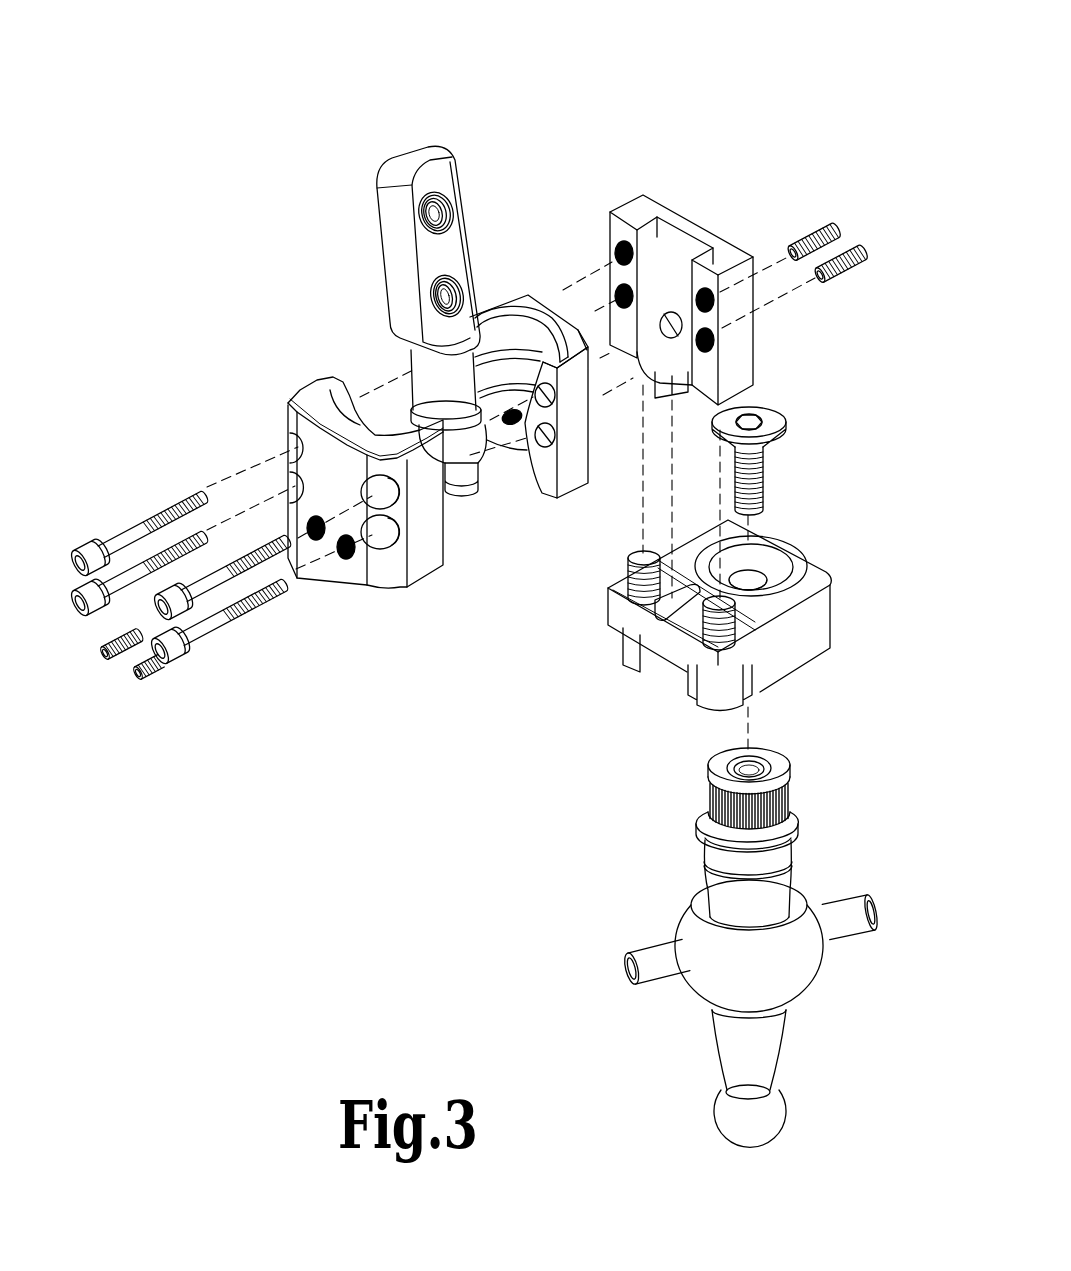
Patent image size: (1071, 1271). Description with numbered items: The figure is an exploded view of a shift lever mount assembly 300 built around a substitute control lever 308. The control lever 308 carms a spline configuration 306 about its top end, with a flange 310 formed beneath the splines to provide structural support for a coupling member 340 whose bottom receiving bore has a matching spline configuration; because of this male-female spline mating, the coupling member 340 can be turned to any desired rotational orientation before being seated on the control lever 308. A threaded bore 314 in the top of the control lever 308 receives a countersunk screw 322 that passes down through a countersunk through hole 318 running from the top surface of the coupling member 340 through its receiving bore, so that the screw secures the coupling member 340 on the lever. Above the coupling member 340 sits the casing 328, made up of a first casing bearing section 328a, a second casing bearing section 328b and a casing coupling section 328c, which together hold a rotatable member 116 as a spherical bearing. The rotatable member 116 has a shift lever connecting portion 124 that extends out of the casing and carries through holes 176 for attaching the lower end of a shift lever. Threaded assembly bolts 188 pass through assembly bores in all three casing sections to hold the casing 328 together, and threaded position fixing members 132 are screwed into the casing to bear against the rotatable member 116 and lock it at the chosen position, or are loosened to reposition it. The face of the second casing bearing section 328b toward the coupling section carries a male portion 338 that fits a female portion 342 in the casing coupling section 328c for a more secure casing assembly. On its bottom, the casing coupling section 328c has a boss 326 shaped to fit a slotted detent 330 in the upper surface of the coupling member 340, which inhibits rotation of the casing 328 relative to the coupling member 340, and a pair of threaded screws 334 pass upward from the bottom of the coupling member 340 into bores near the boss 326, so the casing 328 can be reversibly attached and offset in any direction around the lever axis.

The shift lever mount assembly 300 is at (197, 86).
The rotatable member 116 is at (352, 197).
The shift lever connecting portion 124 is at (461, 182).
The through holes 176 is at (430, 296).
The casing 328 is at (390, 611).
The first casing bearing section 328a is at (314, 388).
The second casing bearing section 328b is at (522, 295).
The casing coupling section 328c is at (673, 255).
The male portion 338 is at (578, 300).
The female portion 342 is at (693, 222).
The threaded assembly bolts 188 is at (93, 552).
The position fixing members 132 is at (108, 655).
The countersunk screw 322 is at (772, 420).
The countersunk through hole 318 is at (762, 563).
The boss 326 is at (678, 440).
The threaded screws 334 is at (628, 555).
The coupling member 340 is at (823, 565).
The detent 330 is at (660, 590).
The threaded bore 314 is at (763, 762).
The spline configuration 306 is at (792, 800).
The flange 310 is at (693, 812).
The control lever 308 is at (770, 855).